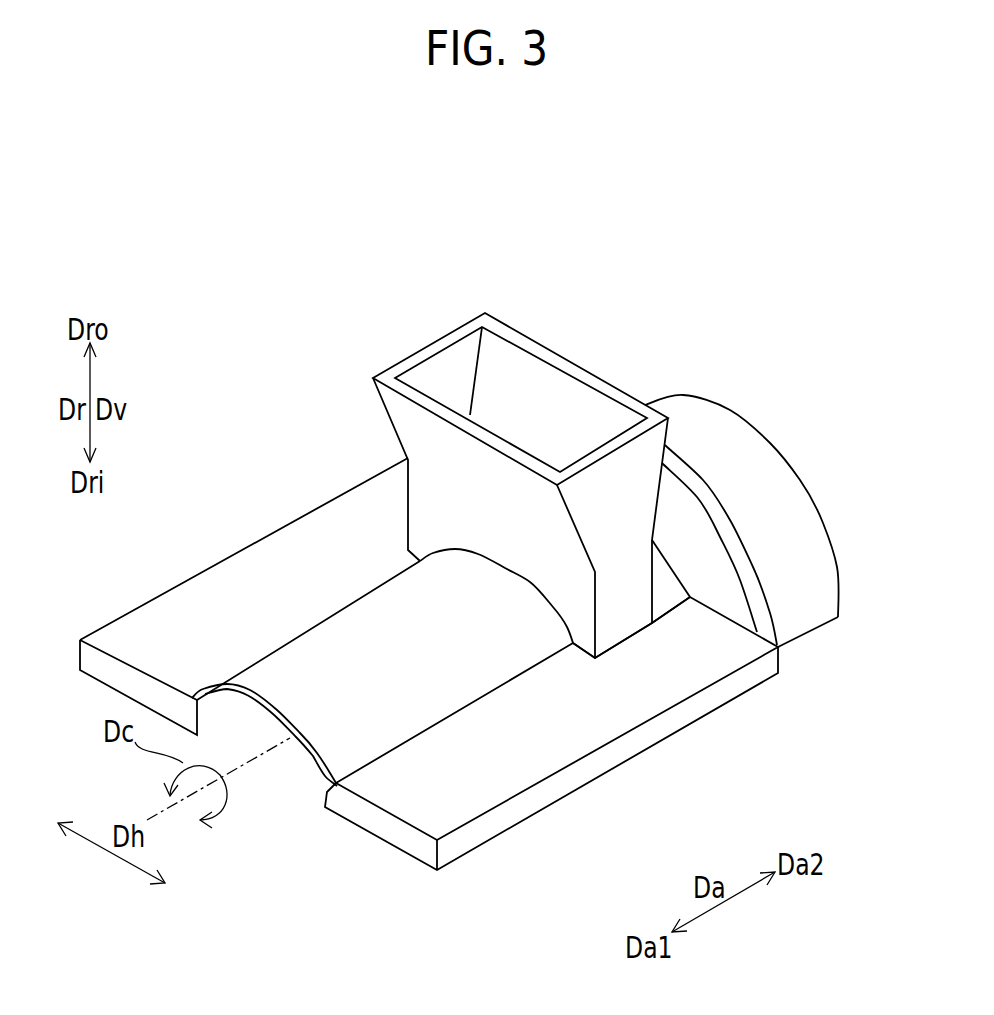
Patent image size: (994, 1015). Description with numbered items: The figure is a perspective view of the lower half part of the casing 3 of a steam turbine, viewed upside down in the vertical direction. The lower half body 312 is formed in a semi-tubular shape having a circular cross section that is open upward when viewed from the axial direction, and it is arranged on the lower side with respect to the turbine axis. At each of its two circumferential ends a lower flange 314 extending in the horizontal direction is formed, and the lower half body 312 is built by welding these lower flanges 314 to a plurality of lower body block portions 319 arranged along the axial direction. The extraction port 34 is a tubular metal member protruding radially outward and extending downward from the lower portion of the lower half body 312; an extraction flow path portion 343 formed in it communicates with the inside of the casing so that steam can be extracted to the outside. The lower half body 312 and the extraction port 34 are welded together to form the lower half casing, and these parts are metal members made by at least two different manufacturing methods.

The casing 3 is at (675, 323).
The extraction port 34 is at (508, 327).
The extraction flow path portion 343 is at (492, 362).
The lower half body 312 is at (268, 657).
The lower flange 314 is at (138, 642).
The lower body block portion 319 is at (678, 463).